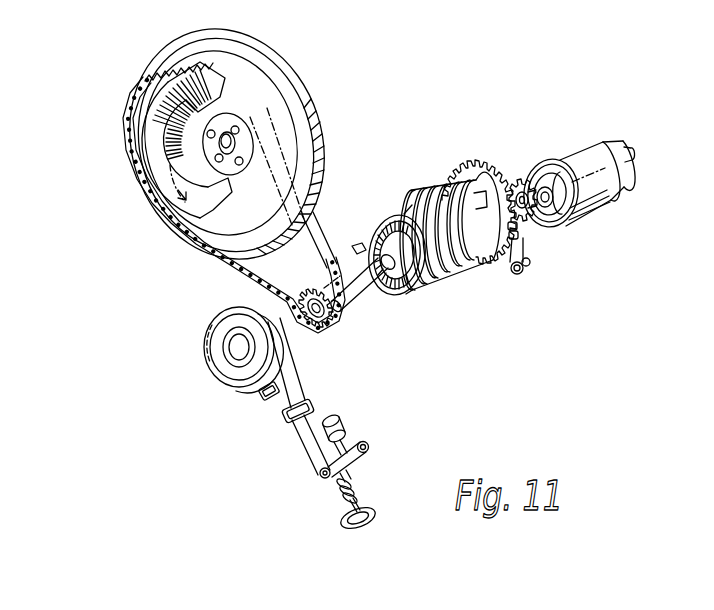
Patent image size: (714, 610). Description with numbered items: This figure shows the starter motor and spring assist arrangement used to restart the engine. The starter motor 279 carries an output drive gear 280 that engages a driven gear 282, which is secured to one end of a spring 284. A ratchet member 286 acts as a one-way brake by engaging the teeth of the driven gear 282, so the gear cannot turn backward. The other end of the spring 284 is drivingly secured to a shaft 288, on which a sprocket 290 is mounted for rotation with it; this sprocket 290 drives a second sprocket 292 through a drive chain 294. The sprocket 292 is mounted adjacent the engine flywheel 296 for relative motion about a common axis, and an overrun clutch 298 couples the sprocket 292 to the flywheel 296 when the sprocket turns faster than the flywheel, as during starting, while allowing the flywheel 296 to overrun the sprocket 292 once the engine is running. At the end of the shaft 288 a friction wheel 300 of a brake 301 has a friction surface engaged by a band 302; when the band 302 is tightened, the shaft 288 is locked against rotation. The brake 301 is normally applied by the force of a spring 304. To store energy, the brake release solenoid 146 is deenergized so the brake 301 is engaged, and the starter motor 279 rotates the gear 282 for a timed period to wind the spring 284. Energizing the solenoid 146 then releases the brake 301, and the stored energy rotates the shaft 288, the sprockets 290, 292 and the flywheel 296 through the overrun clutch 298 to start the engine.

The brake release solenoid 146 is at (340, 424).
The starter motor 279 is at (570, 153).
The output drive gear 280 is at (530, 216).
The driven gear 282 is at (480, 163).
The spring 284 is at (412, 208).
The ratchet member 286 is at (525, 272).
The shaft 288 is at (367, 287).
The sprocket 290 is at (262, 290).
The sprocket 292 is at (140, 84).
The drive chain 294 is at (200, 250).
The engine flywheel 296 is at (287, 82).
The overrun clutch 298 is at (212, 76).
The friction wheel 300 is at (217, 350).
The brake 301 is at (270, 412).
The band 302 is at (290, 374).
The spring 304 is at (340, 478).